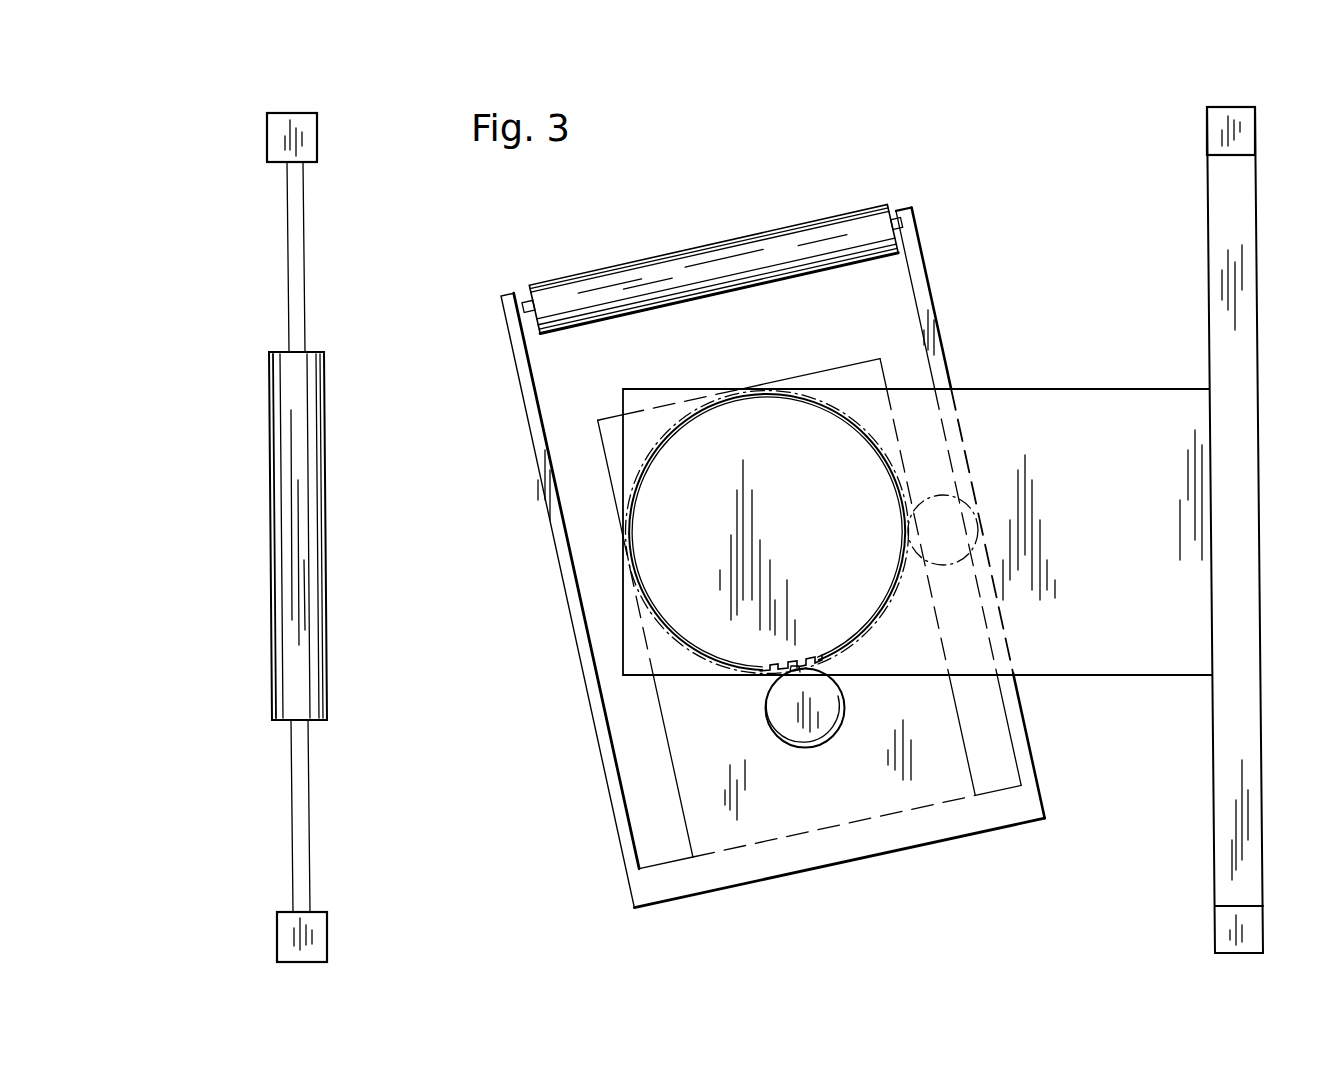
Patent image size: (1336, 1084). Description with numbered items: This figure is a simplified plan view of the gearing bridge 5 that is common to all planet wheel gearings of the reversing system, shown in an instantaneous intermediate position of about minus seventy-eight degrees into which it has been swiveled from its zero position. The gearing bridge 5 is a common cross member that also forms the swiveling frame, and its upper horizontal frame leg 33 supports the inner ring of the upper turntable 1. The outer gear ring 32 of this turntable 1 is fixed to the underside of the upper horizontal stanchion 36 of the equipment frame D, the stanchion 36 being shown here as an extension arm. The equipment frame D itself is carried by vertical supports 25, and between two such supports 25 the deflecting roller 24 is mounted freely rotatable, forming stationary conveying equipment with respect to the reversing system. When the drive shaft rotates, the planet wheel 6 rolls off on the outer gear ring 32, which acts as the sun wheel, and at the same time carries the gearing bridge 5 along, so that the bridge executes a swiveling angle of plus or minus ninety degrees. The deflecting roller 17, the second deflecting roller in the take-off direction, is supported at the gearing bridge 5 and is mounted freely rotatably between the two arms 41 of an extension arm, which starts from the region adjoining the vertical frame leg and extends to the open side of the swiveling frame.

The upper turntable 1 is at (838, 396).
The gearing bridge 5 is at (914, 860).
The planet wheel 6 is at (765, 712).
The deflecting roller 17 is at (685, 272).
The deflecting roller 24 is at (300, 435).
The vertical supports 25 is at (303, 150).
The outer gear ring 32 is at (889, 600).
The upper horizontal frame leg 33 is at (710, 835).
The upper horizontal stanchion 36 is at (1095, 412).
The arms 41 is at (550, 509).
The equipment frame D is at (1262, 482).